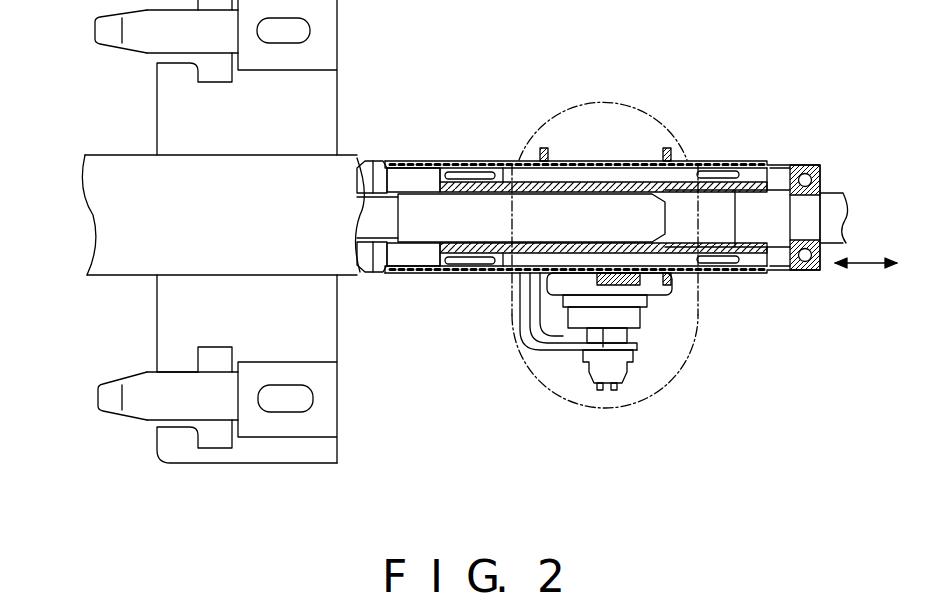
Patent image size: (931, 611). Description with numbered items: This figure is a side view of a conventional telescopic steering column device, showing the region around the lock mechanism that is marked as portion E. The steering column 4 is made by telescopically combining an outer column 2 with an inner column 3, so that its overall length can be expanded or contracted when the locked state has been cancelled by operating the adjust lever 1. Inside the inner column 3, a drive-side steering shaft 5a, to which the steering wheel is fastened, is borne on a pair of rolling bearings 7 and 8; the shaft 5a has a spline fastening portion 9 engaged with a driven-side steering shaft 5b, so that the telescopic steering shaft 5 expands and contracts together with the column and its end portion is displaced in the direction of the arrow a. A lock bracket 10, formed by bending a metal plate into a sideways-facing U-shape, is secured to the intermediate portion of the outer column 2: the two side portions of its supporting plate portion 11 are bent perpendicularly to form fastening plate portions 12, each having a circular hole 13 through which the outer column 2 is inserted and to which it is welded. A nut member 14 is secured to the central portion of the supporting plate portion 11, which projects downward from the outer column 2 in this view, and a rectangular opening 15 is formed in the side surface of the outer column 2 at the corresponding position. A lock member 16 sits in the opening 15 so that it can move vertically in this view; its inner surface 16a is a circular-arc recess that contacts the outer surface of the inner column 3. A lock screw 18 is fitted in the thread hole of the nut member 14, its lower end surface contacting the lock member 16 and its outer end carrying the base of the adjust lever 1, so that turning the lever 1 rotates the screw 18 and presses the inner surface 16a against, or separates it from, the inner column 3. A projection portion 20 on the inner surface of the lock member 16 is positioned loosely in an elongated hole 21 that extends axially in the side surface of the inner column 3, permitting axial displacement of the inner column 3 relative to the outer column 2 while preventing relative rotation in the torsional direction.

The adjust lever 1 is at (537, 355).
The outer column 2 is at (400, 160).
The inner column 3 is at (735, 161).
The steering column 4 is at (367, 157).
The steering shaft 5 is at (406, 241).
The drive-side steering shaft 5a is at (757, 268).
The driven-side steering shaft 5b is at (440, 225).
The rolling bearing 7 is at (797, 165).
The rolling bearing 8 is at (458, 161).
The spline fastening portion 9 is at (612, 161).
The lock bracket 10 is at (697, 300).
The supporting plate portion 11 is at (673, 320).
The fastening plate portions 12 is at (690, 161).
The circular holes 13 is at (553, 161).
The nut member 14 is at (583, 315).
The rectangular opening 15 is at (537, 322).
The lock member 16 is at (645, 310).
The inner surface 16a is at (582, 161).
The lock screw 18 is at (607, 337).
The projection portion 20 is at (633, 161).
The elongated hole 21 is at (512, 313).
The portion E is at (707, 357).
The arrow a is at (866, 276).